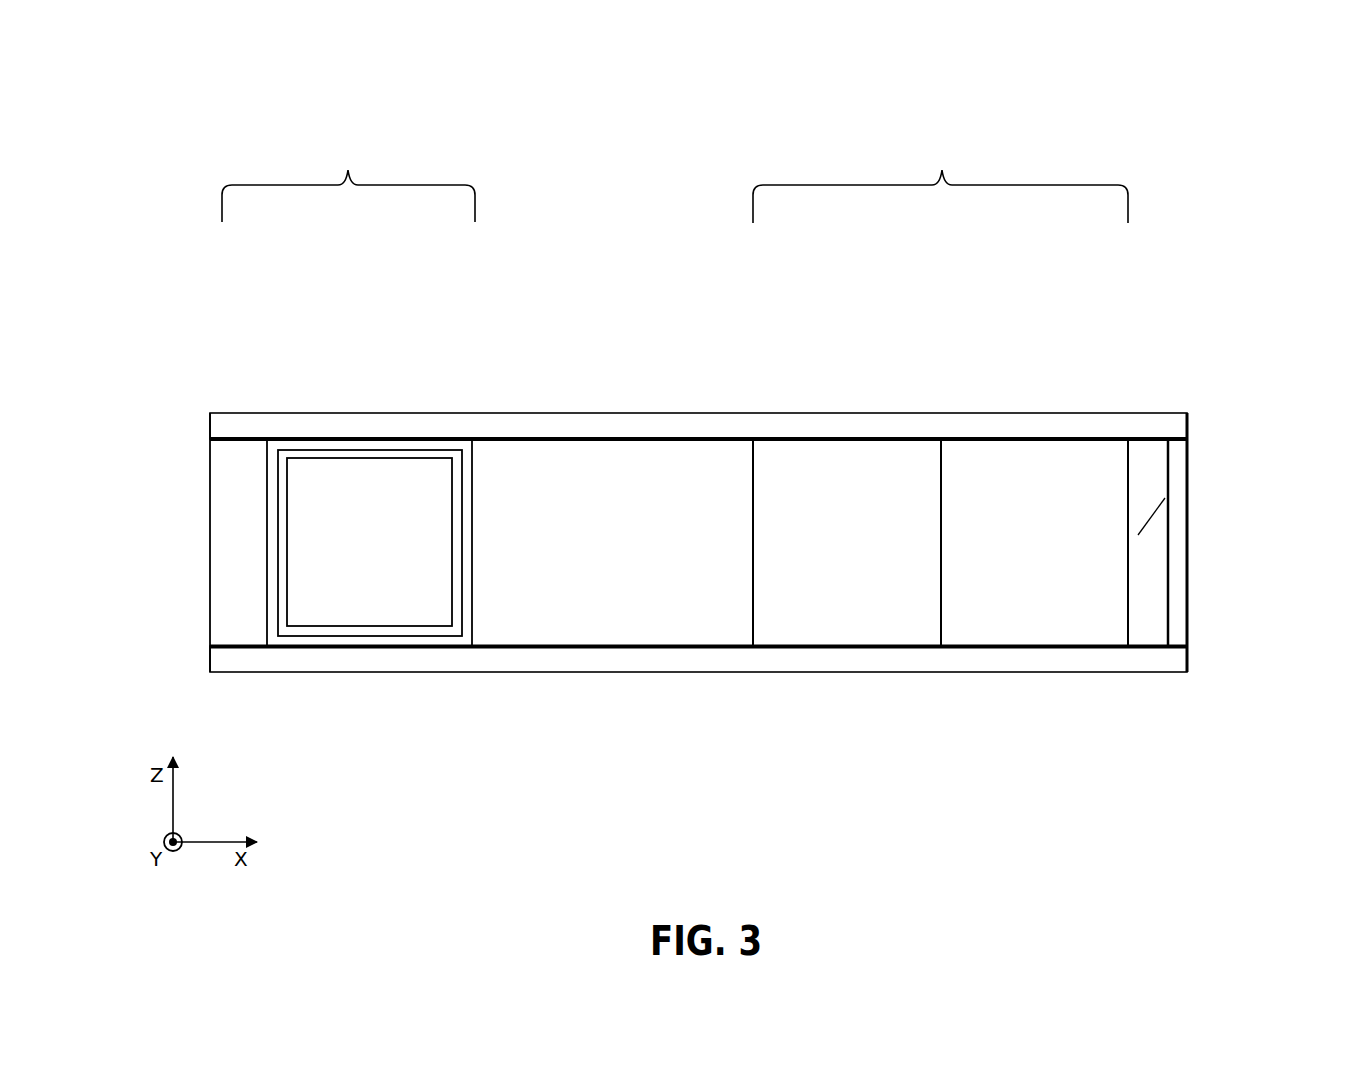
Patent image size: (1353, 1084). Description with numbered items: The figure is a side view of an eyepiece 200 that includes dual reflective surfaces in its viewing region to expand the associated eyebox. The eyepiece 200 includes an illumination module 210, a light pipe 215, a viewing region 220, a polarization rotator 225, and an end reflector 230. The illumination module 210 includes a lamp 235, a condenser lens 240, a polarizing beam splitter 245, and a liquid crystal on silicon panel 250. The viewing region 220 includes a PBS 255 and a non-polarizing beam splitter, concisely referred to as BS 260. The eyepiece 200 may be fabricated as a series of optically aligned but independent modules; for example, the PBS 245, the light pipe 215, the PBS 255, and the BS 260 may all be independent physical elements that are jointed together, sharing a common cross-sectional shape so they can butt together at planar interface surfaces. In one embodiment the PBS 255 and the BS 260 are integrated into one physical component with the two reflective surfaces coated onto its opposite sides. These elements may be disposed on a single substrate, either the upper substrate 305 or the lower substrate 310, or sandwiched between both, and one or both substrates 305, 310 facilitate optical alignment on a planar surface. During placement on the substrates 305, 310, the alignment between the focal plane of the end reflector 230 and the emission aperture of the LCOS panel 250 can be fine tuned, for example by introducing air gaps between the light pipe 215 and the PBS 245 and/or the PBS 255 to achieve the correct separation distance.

The eyepiece 200 is at (235, 102).
The illumination module 210 is at (353, 179).
The viewing region 220 is at (940, 177).
The upper substrate 305 is at (710, 418).
The lower substrate 310 is at (430, 673).
The liquid crystal on silicon panel 250 is at (220, 505).
The polarizing beam splitter 245 is at (293, 445).
The condenser lens 240 is at (427, 455).
The lamp 235 is at (417, 552).
The light pipe 215 is at (632, 571).
The polarizing beam splitter 255 is at (888, 551).
The non-polarizing beam splitter 260 is at (1070, 551).
The polarization rotator 225 is at (1153, 437).
The end reflector 230 is at (1188, 527).